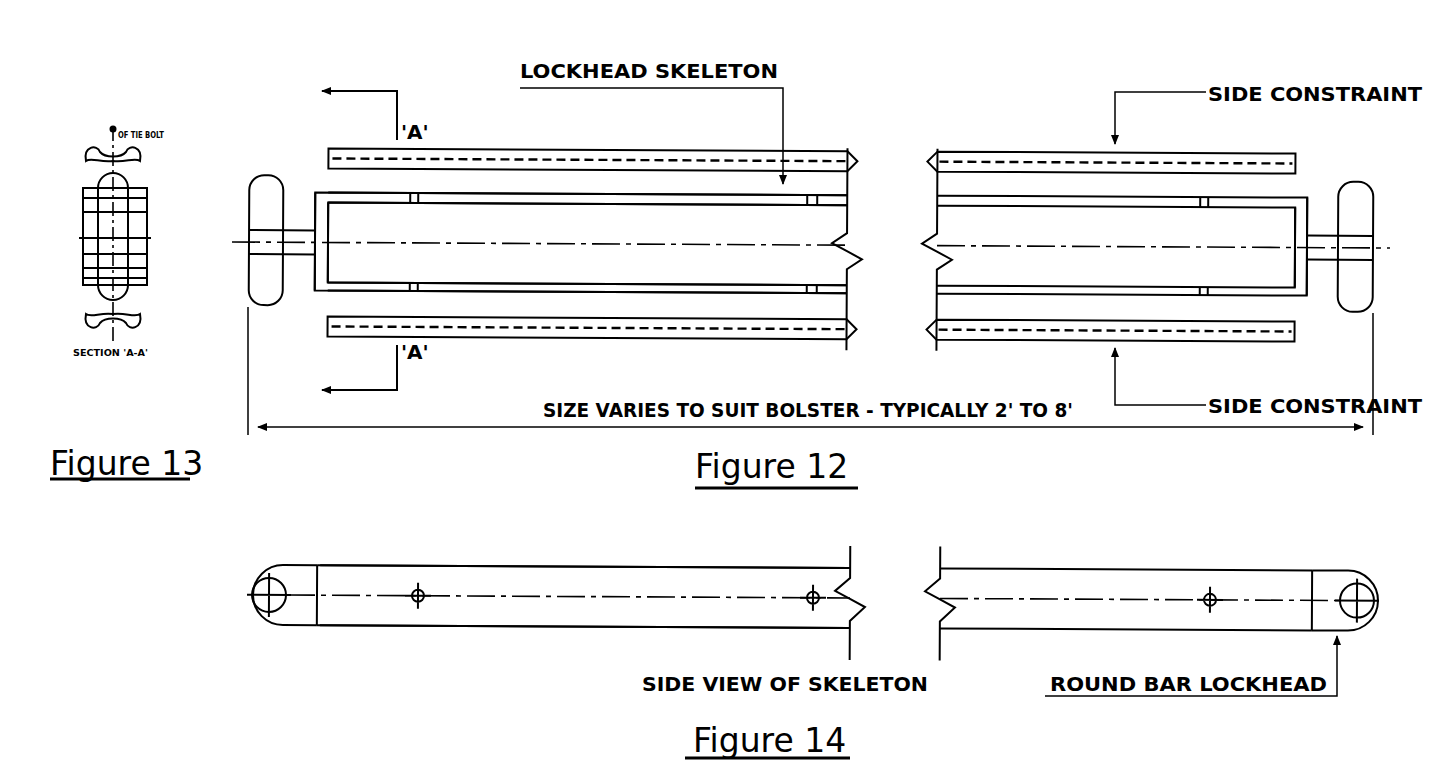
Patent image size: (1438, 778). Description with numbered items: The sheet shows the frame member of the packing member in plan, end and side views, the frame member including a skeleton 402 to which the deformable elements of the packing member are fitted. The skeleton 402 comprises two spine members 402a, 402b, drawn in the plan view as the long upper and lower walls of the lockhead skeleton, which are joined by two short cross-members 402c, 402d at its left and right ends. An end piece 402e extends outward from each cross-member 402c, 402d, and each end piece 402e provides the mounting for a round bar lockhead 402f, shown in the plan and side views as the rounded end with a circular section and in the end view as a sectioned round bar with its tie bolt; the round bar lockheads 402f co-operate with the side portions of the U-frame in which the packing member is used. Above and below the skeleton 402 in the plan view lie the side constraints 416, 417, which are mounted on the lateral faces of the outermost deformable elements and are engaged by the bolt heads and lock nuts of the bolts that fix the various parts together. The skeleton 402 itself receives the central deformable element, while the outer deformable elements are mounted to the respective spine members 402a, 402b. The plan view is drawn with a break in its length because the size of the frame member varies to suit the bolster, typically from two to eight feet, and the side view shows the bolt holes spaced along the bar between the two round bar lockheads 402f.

In FIG. 12, the skeleton 402 is at (1007, 197).
In FIG. 14, the skeleton 402 is at (971, 556).
In FIG. 12, the spine member 402a is at (497, 292).
In FIG. 14, the spine member 402a is at (573, 620).
In FIG. 12, the spine member 402b is at (530, 197).
In FIG. 12, the cross-member 402c is at (315, 207).
In FIG. 12, the cross-member 402d is at (1311, 212).
In FIG. 12, the end piece 402e is at (286, 262).
In FIG. 14, the end piece 402e is at (297, 615).
In FIG. 12, the round bar lockhead 402f is at (258, 303).
In FIG. 14, the round bar lockhead 402f is at (257, 612).
In FIG. 12, the side constraint 416 is at (630, 337).
In FIG. 12, the side constraint 417 is at (1060, 152).